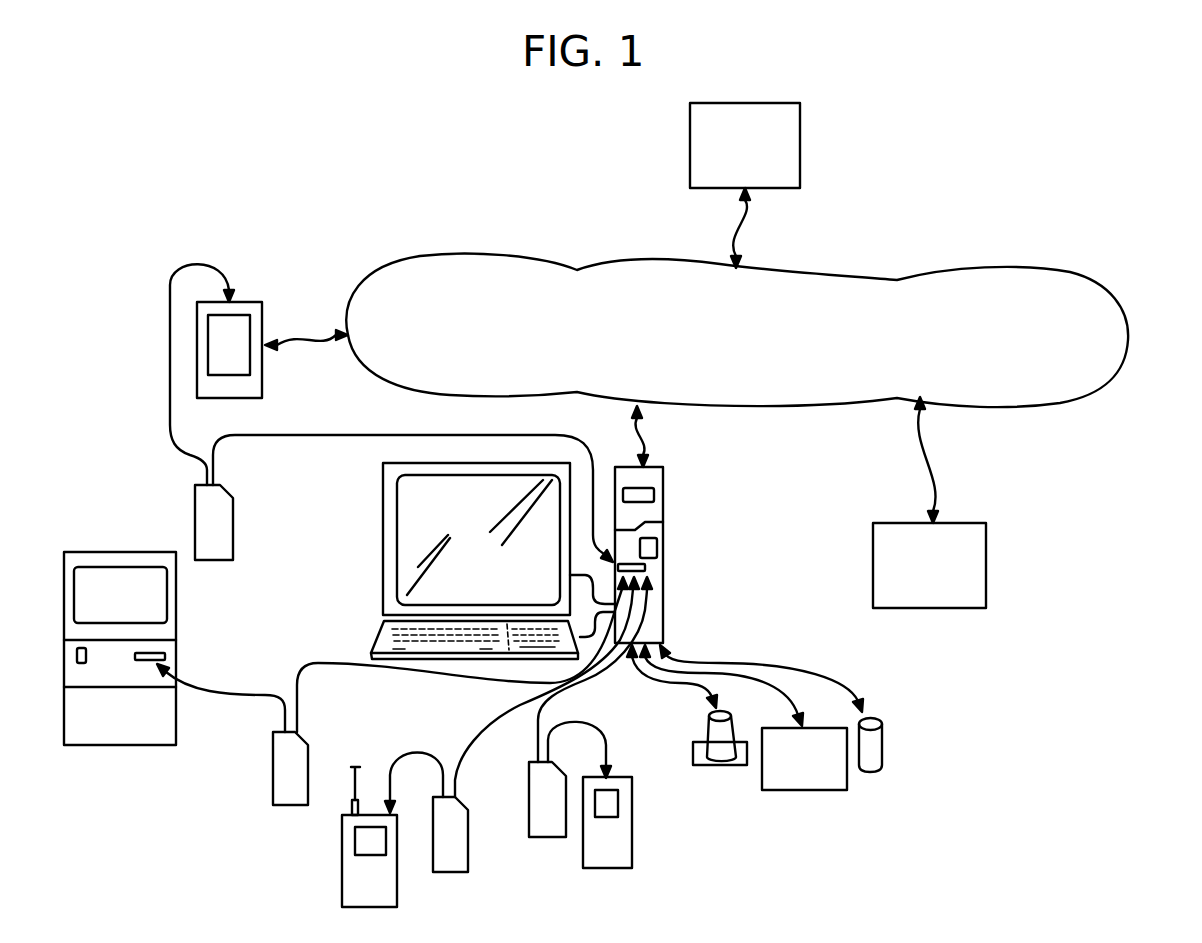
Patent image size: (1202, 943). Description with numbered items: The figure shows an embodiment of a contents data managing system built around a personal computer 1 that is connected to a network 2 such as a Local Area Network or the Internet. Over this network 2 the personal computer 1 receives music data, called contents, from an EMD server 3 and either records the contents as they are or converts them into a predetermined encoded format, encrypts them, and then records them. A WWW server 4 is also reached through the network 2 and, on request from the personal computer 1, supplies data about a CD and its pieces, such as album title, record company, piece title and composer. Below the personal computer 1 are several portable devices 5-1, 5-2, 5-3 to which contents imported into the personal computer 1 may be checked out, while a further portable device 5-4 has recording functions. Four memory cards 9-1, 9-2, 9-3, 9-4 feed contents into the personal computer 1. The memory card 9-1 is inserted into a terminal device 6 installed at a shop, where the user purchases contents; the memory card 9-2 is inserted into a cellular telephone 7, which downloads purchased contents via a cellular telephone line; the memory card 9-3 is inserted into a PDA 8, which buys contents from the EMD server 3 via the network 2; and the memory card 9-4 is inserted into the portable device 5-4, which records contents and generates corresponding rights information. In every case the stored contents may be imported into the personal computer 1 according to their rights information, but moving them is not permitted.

The personal computer 1 is at (663, 553).
The network 2 is at (1128, 340).
The EMD server 3 is at (800, 150).
The WWW server 4 is at (986, 563).
The portable device 5-1 is at (717, 765).
The portable device 5-2 is at (800, 790).
The portable device 5-3 is at (870, 772).
The portable device with recording functions 5-4 is at (632, 858).
The terminal device 6 is at (120, 551).
The cellular telephone 7 is at (341, 874).
The PDA 8 is at (249, 301).
The memory card 9-1 is at (272, 785).
The memory card 9-2 is at (445, 872).
The memory card 9-3 is at (233, 522).
The memory card 9-4 is at (543, 837).